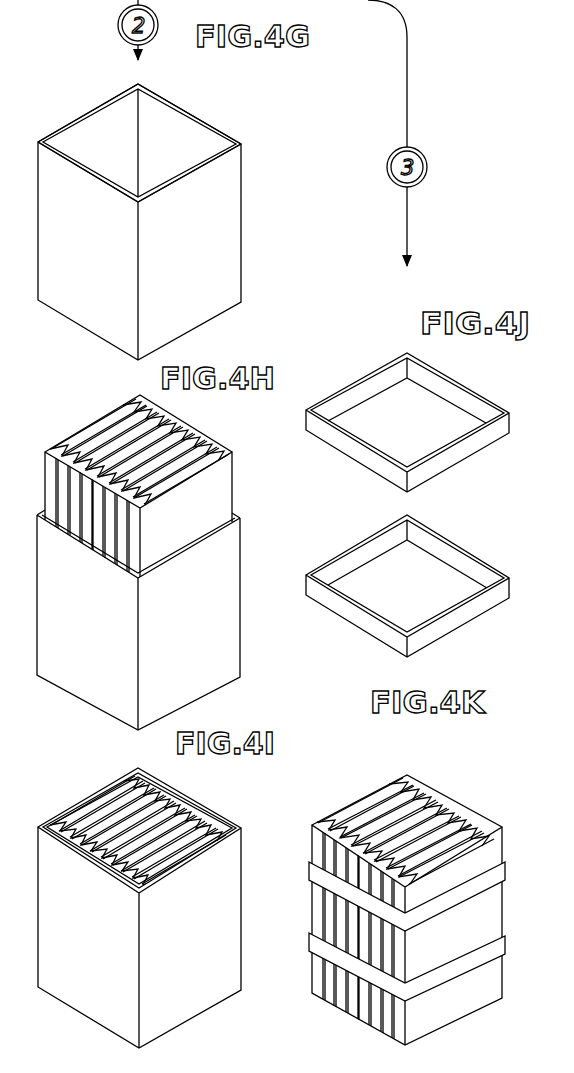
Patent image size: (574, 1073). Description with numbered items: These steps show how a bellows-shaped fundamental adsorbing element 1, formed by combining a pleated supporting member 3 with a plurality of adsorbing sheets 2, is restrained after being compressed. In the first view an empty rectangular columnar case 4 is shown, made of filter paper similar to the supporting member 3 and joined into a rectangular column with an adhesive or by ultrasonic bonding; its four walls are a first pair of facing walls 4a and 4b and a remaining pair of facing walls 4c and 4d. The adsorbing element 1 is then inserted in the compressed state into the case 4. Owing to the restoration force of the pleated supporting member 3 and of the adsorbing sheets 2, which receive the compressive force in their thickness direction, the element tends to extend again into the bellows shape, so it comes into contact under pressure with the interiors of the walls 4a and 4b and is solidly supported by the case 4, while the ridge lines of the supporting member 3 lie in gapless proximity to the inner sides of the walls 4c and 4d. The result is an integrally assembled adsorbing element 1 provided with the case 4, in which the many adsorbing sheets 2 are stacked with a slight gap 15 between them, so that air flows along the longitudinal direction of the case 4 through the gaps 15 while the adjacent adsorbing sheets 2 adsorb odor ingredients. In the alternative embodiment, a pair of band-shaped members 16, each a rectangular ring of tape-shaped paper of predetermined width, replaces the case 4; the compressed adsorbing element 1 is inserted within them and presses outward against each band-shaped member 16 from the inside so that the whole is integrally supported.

In FIG. 4K, the adsorbing element 1 is at (482, 792).
In FIG. 4H, the adsorbing sheet 2 is at (110, 422).
In FIG. 4I, the adsorbing sheet 2 is at (130, 798).
In FIG. 4K, the adsorbing sheet 2 is at (374, 795).
In FIG. 4H, the supporting member 3 is at (33, 447).
In FIG. 4I, the supporting member 3 is at (203, 803).
In FIG. 4K, the supporting member 3 is at (310, 812).
In FIG. 4G, the case 4 is at (262, 136).
In FIG. 4H, the case 4 is at (260, 601).
In FIG. 4I, the case 4 is at (232, 937).
In FIG. 4G, the wall 4a is at (84, 108).
In FIG. 4G, the wall 4b is at (192, 178).
In FIG. 4G, the wall 4c is at (97, 181).
In FIG. 4G, the wall 4d is at (202, 116).
In FIG. 4I, the gap 15 is at (92, 815).
In FIG. 4K, the gap 15 is at (425, 814).
In FIG. 4J, the band-shaped member 16 is at (347, 451).
In FIG. 4K, the band-shaped member 16 is at (323, 888).